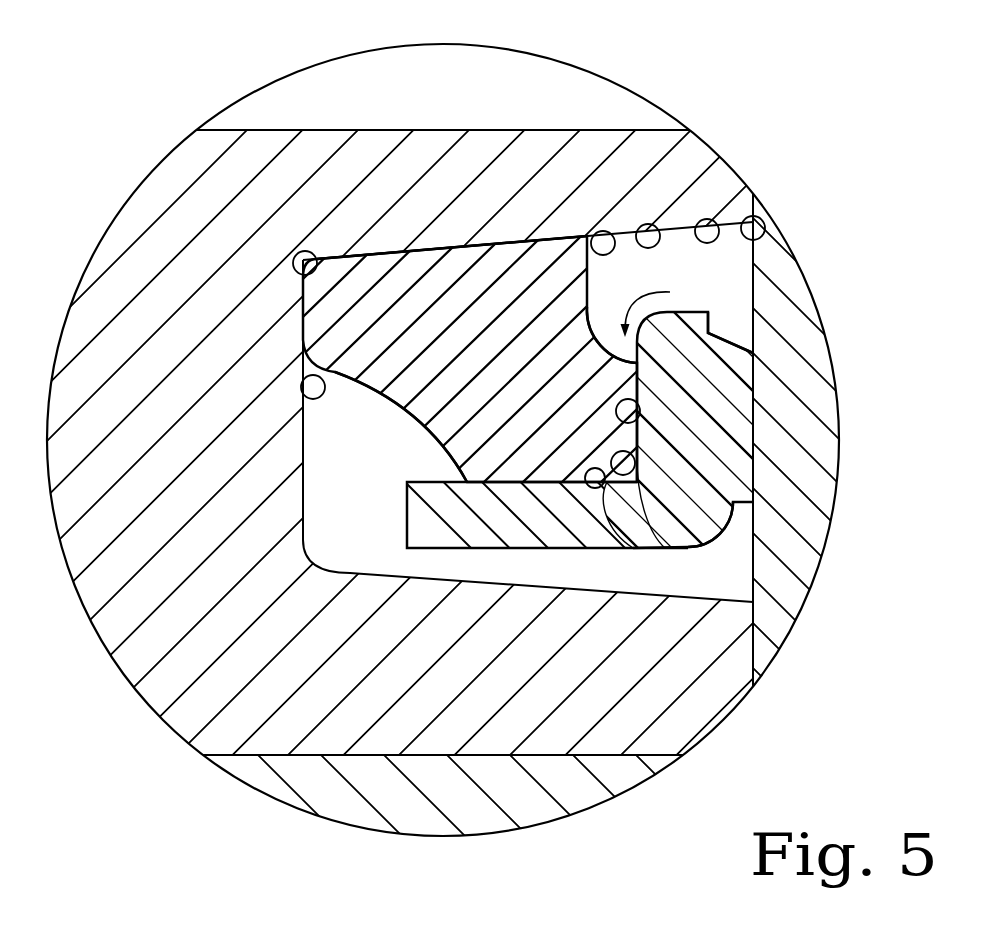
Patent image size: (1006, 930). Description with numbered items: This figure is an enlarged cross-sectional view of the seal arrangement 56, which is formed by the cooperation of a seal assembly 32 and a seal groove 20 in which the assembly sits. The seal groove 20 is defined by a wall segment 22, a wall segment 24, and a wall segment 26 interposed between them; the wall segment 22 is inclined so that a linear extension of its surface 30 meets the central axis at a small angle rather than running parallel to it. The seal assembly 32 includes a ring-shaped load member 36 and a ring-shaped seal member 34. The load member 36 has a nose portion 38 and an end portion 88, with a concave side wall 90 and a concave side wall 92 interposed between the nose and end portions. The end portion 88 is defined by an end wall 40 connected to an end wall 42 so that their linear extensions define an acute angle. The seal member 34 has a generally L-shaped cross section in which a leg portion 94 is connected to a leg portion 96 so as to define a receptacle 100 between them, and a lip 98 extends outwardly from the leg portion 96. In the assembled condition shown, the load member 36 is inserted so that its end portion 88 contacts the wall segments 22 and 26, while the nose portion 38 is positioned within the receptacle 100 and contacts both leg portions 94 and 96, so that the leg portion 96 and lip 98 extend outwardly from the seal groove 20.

The seal groove 20 is at (492, 286).
The wall segment 22 is at (707, 218).
The wall segment 24 is at (692, 692).
The wall segment 26 is at (302, 382).
The surface 30 is at (762, 232).
The seal assembly 32 is at (821, 177).
The seal member 34 is at (755, 352).
The load member 36 is at (590, 300).
The nose portion 38 is at (663, 306).
The end wall 40 is at (690, 427).
The end wall 42 is at (628, 535).
The seal arrangement 56 is at (522, 306).
The end portion 88 is at (318, 272).
The concave side wall 90 is at (603, 228).
The concave side wall 92 is at (390, 402).
The leg portion 94 is at (510, 530).
The leg portion 96 is at (729, 350).
The lip 98 is at (737, 380).
The receptacle 100 is at (685, 548).